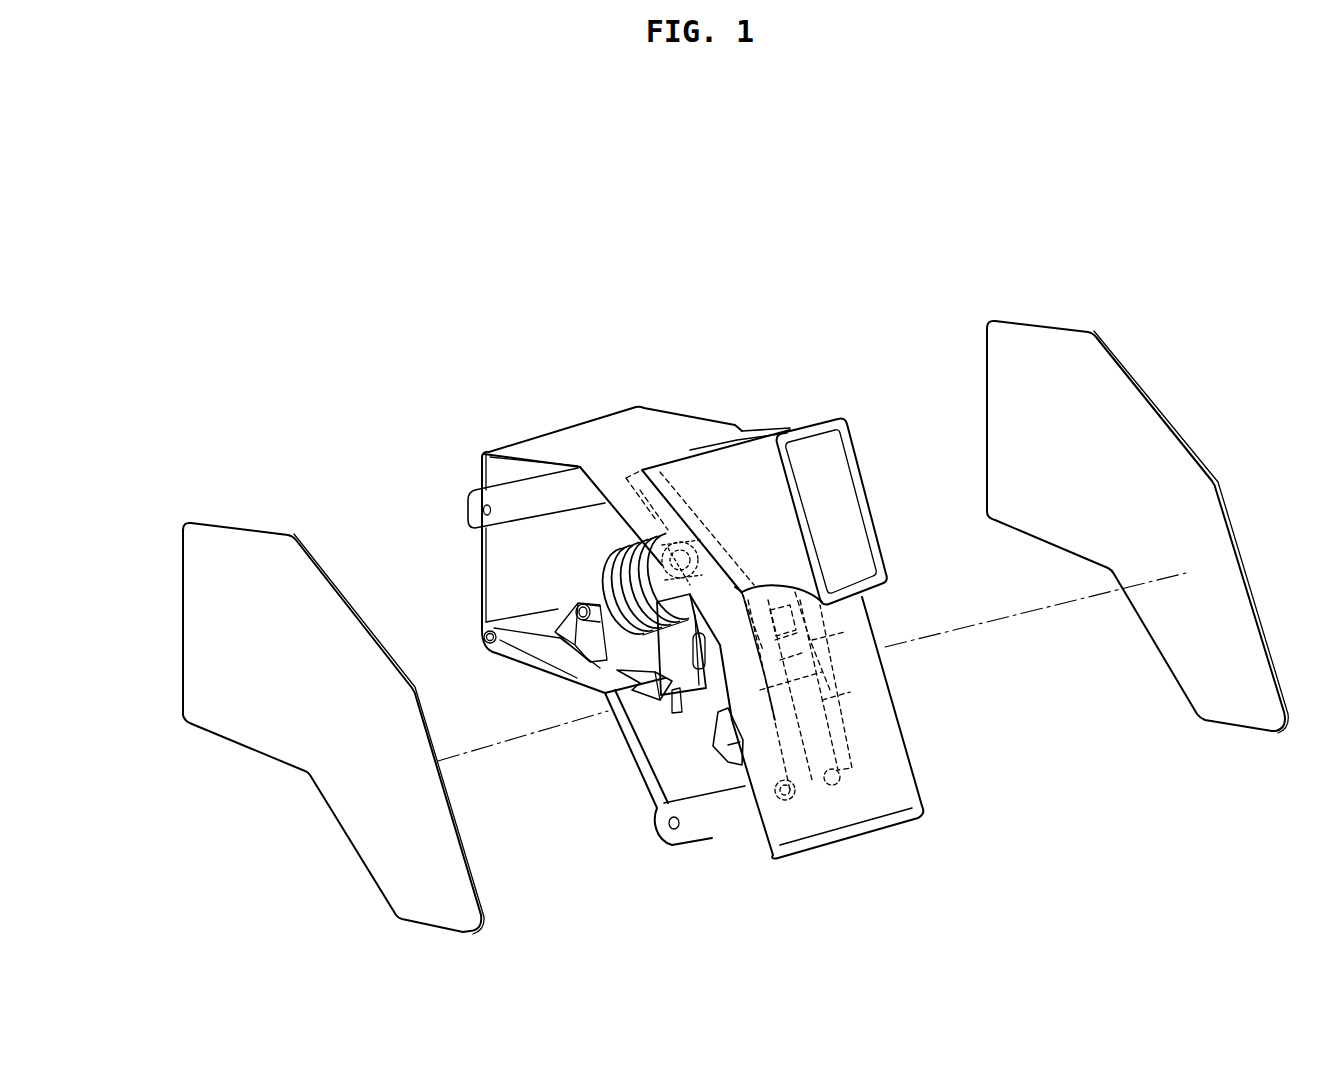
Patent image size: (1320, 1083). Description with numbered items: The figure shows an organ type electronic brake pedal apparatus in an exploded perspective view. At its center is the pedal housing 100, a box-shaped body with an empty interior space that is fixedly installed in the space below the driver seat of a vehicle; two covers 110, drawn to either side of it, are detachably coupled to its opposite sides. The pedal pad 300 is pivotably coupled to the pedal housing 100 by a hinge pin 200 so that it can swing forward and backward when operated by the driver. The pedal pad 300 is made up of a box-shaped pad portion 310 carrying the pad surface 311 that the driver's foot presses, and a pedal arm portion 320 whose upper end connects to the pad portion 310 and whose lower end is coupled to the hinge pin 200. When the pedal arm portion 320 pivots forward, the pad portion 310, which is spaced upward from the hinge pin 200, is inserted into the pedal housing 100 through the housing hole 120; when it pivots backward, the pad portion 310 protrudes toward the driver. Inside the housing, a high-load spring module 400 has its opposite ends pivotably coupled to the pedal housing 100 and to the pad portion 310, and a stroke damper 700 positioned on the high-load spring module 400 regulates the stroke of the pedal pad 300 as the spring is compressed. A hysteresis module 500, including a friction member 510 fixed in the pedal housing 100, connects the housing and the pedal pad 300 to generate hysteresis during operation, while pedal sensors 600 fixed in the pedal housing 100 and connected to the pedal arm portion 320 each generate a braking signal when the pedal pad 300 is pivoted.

The pedal housing 100 is at (585, 433).
The covers 110 is at (382, 867).
The housing hole 120 is at (688, 517).
The hinge pin 200 is at (828, 790).
The pedal pad 300 is at (820, 416).
The pad portion 310 is at (721, 465).
The pad surface 311 is at (845, 492).
The pedal arm portion 320 is at (793, 747).
The high-load spring module 400 is at (594, 577).
The hysteresis module 500 is at (710, 742).
The friction member 510 is at (730, 745).
The pedal sensors 600 is at (690, 692).
The stroke damper 700 is at (600, 556).